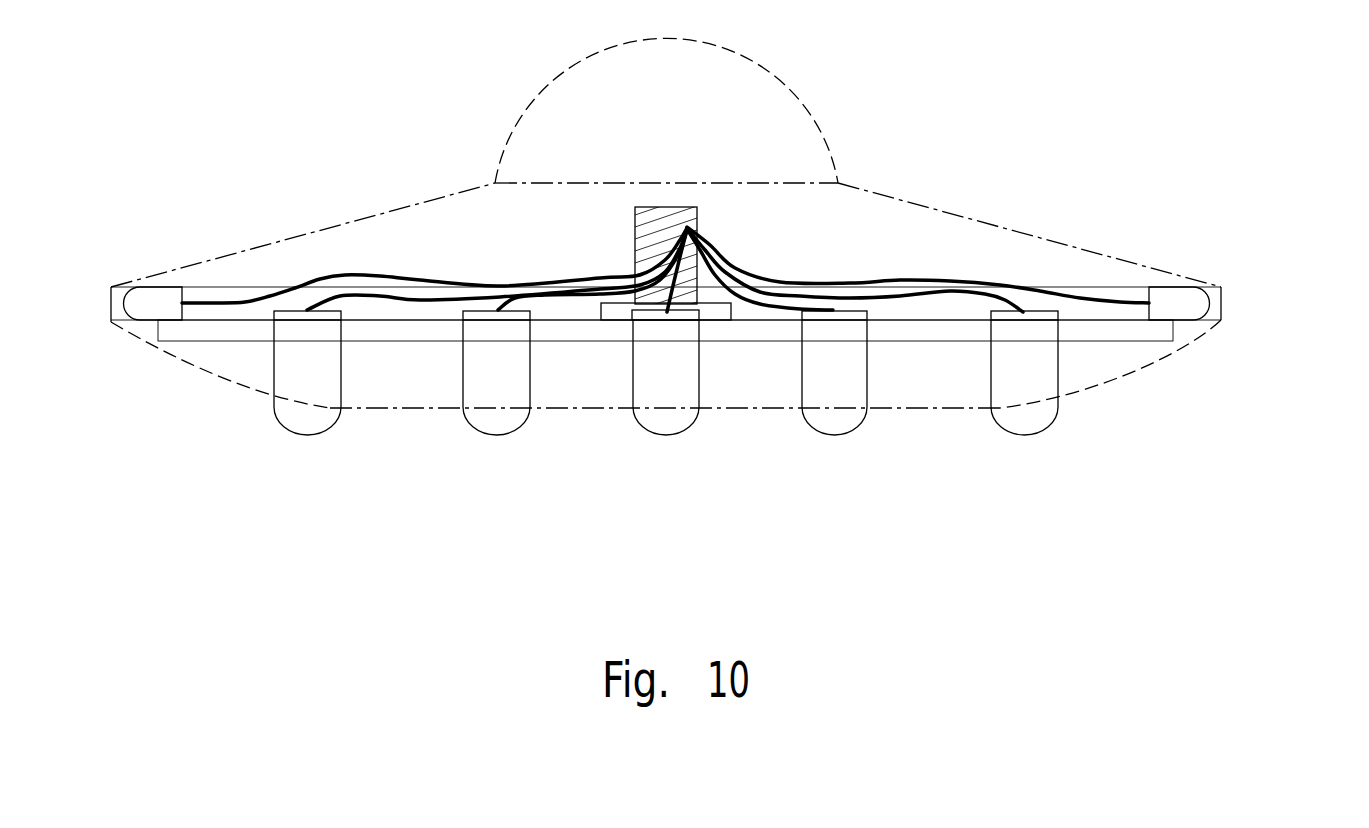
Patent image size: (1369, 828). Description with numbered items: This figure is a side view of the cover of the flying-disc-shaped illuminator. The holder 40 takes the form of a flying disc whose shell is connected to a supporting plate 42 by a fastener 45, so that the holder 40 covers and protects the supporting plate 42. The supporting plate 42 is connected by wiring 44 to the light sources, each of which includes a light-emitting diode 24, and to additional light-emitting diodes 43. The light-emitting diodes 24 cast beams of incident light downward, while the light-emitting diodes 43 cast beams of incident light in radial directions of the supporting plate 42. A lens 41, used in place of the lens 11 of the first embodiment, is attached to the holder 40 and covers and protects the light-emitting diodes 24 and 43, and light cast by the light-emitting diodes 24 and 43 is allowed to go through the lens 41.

The lens 11 is at (398, 410).
The light-emitting diode 24 is at (1018, 418).
The holder 40 is at (977, 218).
The lens 41 is at (1222, 300).
The supporting plate 42 is at (1131, 328).
The light-emitting diodes 43 is at (148, 302).
The wiring 44 is at (323, 277).
The fastener 45 is at (687, 214).